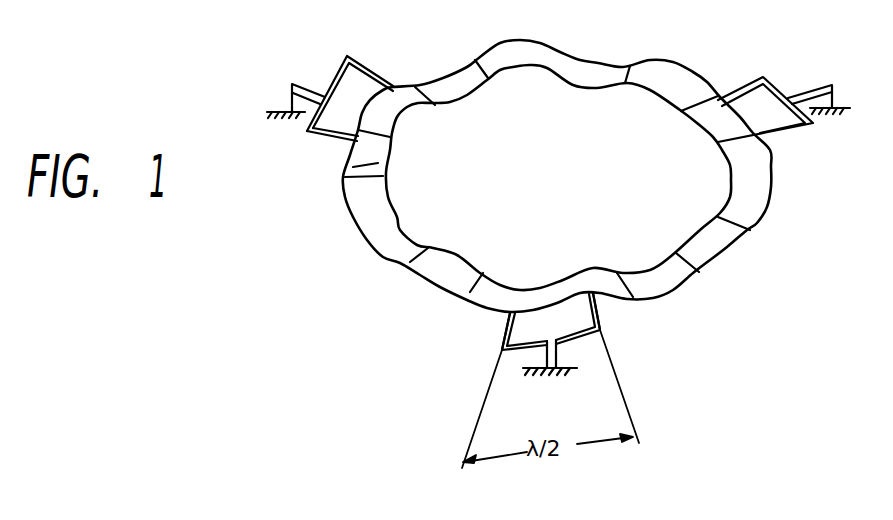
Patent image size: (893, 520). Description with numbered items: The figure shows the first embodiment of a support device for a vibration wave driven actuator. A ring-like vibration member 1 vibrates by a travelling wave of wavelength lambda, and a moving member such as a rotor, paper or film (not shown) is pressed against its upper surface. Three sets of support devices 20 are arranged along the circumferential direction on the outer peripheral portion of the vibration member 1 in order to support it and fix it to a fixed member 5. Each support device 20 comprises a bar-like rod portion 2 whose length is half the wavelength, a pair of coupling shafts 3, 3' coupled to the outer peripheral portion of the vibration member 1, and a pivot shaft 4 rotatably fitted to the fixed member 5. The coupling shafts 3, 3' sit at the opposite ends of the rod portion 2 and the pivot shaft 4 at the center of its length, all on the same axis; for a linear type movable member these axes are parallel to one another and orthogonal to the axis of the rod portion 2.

The vibration member 1 is at (608, 72).
The support device 20 is at (299, 47).
The rod portion 2 is at (510, 352).
The coupling shaft 3 is at (477, 331).
The coupling shaft 3' is at (625, 318).
The pivot shaft 4 is at (558, 348).
The fixed member 5 is at (552, 385).